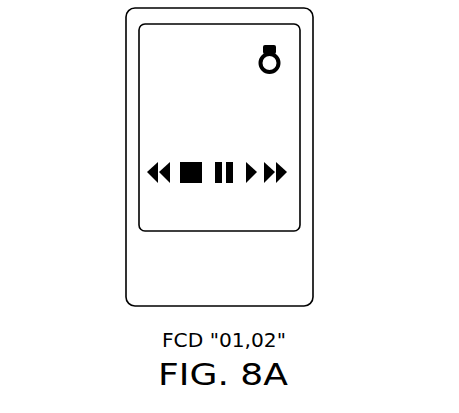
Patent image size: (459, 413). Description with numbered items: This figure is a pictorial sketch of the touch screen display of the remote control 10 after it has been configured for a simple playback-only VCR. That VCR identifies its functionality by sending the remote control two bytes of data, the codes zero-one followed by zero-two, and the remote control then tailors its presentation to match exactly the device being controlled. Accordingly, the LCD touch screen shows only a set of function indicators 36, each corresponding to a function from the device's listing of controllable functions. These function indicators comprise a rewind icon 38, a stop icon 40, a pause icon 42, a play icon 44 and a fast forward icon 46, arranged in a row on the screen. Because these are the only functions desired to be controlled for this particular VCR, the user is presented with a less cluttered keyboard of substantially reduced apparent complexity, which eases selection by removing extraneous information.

The remote control 10 is at (111, 216).
The function indicators 36 is at (282, 132).
The rewind icon 38 is at (162, 159).
The stop icon 40 is at (188, 161).
The pause icon 42 is at (226, 184).
The play icon 44 is at (252, 184).
The fast forward icon 46 is at (280, 185).